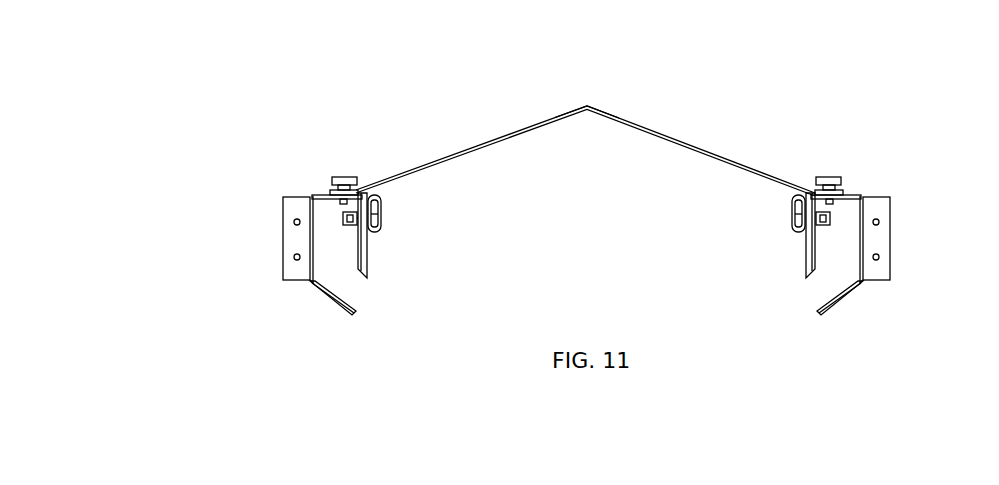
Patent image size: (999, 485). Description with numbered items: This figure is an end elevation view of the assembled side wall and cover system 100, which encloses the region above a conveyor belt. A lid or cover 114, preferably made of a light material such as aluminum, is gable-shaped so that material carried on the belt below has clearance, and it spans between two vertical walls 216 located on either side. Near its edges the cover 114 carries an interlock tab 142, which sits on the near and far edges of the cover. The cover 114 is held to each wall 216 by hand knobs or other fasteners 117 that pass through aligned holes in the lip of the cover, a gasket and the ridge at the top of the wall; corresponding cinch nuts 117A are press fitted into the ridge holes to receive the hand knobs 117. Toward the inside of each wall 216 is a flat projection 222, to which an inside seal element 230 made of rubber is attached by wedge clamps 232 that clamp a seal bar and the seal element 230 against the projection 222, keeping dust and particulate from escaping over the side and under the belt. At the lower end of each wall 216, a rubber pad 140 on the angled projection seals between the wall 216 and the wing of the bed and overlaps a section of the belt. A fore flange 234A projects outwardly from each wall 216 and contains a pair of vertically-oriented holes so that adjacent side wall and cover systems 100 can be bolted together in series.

The side wall and cover system 100 is at (450, 95).
The cover 114 is at (585, 157).
The interlock tab 142 is at (633, 102).
The hand knob 117 is at (630, 152).
The cinch nut 117A is at (833, 202).
The wall 216 is at (641, 171).
The flat projection 222 is at (355, 205).
The inside seal element 230 is at (370, 260).
The wedge clamp 232 is at (790, 208).
The fore flange 234A is at (283, 276).
The rubber pad 140 is at (352, 305).